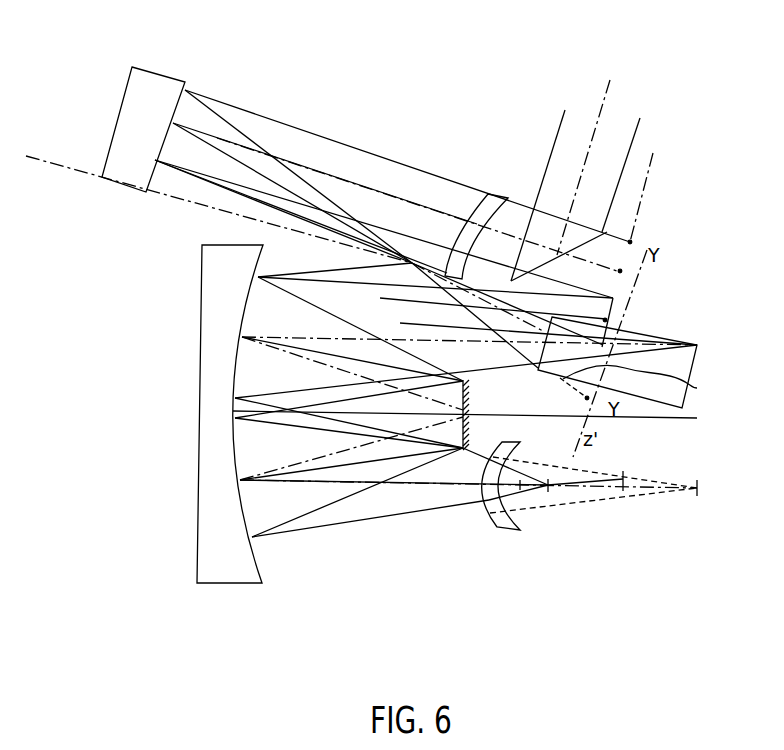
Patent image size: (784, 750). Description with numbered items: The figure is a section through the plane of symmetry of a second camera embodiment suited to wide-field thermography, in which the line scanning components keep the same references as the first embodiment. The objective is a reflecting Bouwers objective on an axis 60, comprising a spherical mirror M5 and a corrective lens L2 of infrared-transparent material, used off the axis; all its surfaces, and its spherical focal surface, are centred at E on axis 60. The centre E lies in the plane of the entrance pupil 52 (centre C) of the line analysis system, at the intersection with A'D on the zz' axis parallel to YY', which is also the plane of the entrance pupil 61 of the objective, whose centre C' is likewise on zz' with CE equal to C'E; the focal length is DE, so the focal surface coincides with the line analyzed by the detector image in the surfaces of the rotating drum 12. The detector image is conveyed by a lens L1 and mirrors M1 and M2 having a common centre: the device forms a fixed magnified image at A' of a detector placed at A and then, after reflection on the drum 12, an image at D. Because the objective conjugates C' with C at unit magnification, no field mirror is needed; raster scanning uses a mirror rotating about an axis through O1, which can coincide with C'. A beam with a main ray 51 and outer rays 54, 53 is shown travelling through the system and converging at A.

The rotating drum 12 is at (680, 368).
The main ray 51 is at (363, 187).
The entrance pupil of the line analysis system 52 is at (587, 398).
The outer ray 53 is at (622, 167).
The outer ray 54 is at (552, 148).
The objective axis 60 is at (60, 166).
The entrance pupil of the Bouwers objective 61 is at (632, 242).
The mirror M1 is at (250, 540).
The mirror M2 is at (467, 397).
The spherical mirror M5 is at (178, 98).
The lens L1 is at (490, 525).
The corrective lens L2 is at (482, 212).
The image point D is at (411, 267).
The centre of the objective surfaces E is at (606, 320).
The centre of the entrance pupil of the line analysis system C is at (639, 383).
The centre of the entrance pupil of the Bouwers objective C' is at (646, 283).
The detector position A is at (468, 502).
The magnified detector image A' is at (482, 354).
The virtual image point A'' is at (613, 486).
The rotation axis point O1 is at (581, 183).